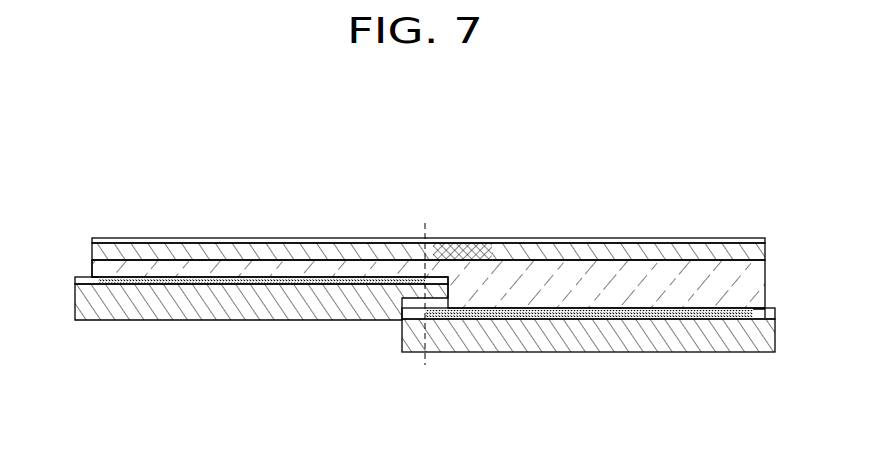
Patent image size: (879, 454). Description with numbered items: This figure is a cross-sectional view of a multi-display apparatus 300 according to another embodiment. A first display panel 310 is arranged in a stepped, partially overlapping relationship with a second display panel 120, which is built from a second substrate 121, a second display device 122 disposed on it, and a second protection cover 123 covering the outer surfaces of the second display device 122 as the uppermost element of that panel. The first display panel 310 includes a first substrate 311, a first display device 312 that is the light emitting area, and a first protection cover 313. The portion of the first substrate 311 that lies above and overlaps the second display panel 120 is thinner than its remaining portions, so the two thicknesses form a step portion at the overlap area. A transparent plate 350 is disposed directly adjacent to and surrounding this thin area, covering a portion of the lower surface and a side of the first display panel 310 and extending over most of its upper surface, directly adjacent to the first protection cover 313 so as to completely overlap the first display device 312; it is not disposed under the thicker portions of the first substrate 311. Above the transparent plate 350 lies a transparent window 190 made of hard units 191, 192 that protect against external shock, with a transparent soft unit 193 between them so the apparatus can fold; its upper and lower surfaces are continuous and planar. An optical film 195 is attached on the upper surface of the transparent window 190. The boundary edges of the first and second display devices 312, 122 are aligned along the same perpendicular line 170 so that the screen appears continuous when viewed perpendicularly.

The multi-display apparatus 300 is at (117, 170).
The first display panel 310 is at (93, 322).
The first substrate 311 is at (75, 305).
The first display device 312 is at (110, 280).
The first protection cover 313 is at (75, 277).
The transparent plate 350 is at (697, 277).
The transparent window 190 is at (612, 176).
The hard unit 191 is at (327, 247).
The hard unit 192 is at (612, 247).
The transparent soft unit 193 is at (465, 247).
The optical film 195 is at (760, 240).
The perpendicular line 170 is at (425, 309).
The second display panel 120 is at (723, 357).
The second substrate 121 is at (775, 342).
The second display device 122 is at (755, 312).
The second protection cover 123 is at (775, 312).